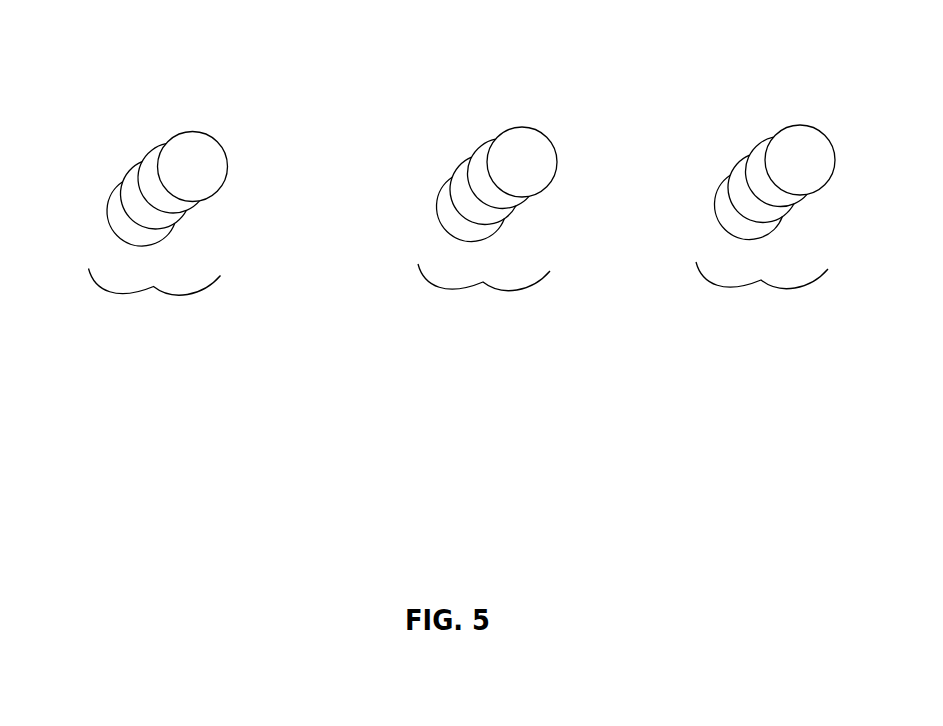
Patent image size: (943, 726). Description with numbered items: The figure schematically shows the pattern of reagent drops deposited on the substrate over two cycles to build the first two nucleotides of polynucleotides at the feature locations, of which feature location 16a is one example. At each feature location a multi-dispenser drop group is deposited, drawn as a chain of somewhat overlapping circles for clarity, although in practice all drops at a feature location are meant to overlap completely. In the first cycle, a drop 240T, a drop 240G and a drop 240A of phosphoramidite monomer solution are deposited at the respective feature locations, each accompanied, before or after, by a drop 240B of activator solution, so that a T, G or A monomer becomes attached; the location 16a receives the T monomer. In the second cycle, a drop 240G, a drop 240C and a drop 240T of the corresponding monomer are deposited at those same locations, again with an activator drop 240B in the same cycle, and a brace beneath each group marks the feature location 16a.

The drop of activator solution 240B is at (180, 141).
The drop of G phosphoramidite monomer solution 240G is at (170, 137).
The drop of T phosphoramidite monomer solution 240T is at (108, 210).
The drop of C phosphoramidite monomer solution 240C is at (500, 135).
The drop of A phosphoramidite monomer solution 240A is at (715, 203).
The feature location 16a is at (459, 293).